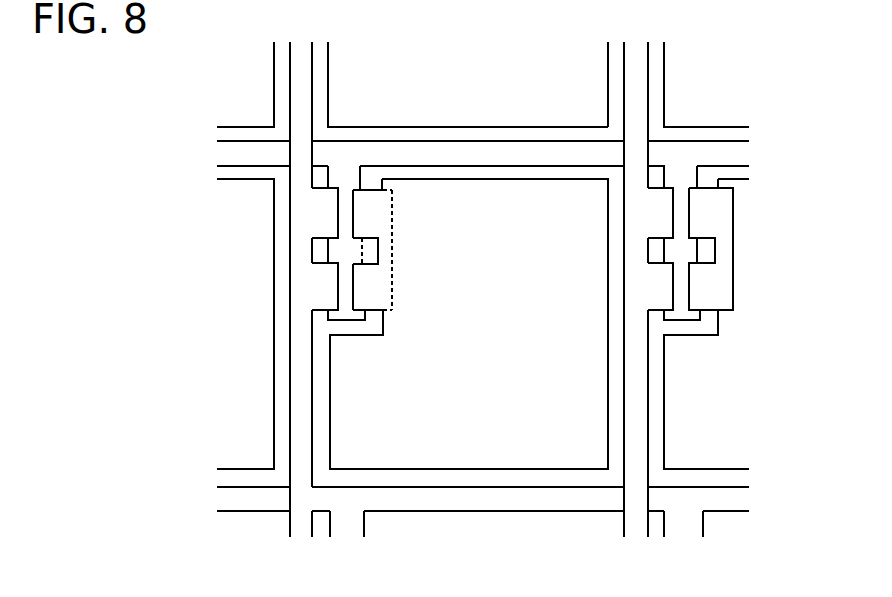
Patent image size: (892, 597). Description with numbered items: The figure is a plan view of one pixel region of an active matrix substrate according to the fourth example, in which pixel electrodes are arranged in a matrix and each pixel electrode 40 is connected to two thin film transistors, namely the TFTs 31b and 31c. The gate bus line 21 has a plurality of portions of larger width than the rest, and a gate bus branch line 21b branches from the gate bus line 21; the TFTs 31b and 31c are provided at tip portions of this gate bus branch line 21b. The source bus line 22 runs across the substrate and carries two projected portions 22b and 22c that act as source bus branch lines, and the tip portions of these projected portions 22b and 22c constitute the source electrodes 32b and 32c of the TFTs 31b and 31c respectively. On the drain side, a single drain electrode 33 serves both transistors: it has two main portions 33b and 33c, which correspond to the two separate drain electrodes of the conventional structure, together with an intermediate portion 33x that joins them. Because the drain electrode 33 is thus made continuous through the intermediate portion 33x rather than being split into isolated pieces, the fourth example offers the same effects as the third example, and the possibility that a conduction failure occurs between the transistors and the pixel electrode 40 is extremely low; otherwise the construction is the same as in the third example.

The gate bus line 21 is at (707, 152).
The gate bus branch line 21b is at (347, 318).
The source bus line 22 is at (300, 90).
The projected portion 22b is at (320, 227).
The projected portion 22c is at (313, 281).
The TFT 31b is at (355, 206).
The TFT 31c is at (339, 289).
The source electrode 32b is at (320, 205).
The source electrode 32c is at (320, 302).
The drain electrode 33 is at (403, 297).
The main portion 33b is at (382, 236).
The main portion 33c is at (375, 293).
The intermediate portion 33x is at (380, 265).
The pixel electrode 40 is at (543, 408).